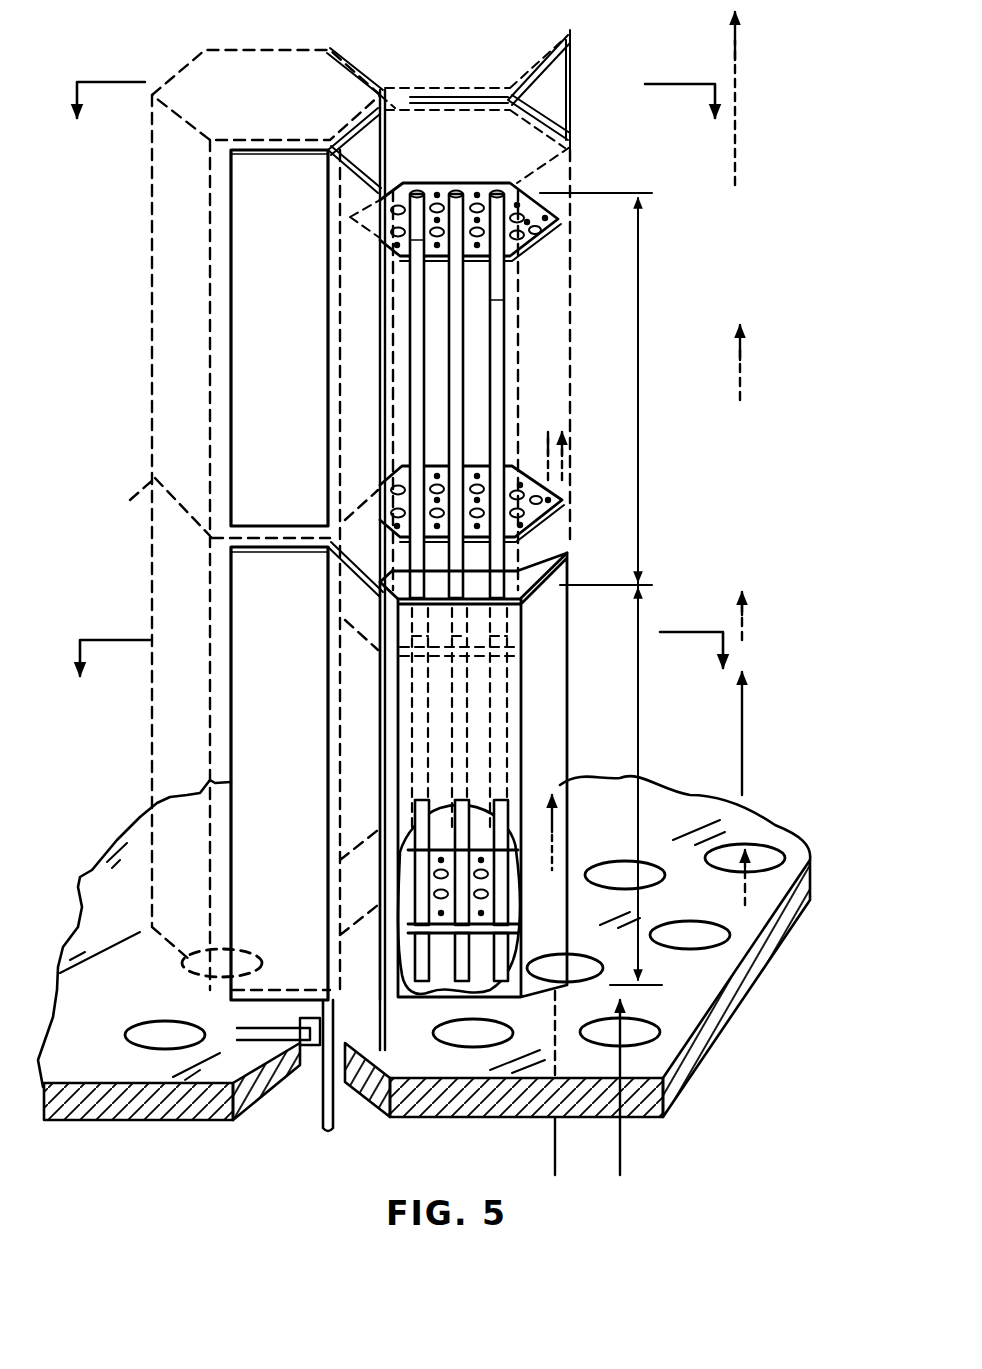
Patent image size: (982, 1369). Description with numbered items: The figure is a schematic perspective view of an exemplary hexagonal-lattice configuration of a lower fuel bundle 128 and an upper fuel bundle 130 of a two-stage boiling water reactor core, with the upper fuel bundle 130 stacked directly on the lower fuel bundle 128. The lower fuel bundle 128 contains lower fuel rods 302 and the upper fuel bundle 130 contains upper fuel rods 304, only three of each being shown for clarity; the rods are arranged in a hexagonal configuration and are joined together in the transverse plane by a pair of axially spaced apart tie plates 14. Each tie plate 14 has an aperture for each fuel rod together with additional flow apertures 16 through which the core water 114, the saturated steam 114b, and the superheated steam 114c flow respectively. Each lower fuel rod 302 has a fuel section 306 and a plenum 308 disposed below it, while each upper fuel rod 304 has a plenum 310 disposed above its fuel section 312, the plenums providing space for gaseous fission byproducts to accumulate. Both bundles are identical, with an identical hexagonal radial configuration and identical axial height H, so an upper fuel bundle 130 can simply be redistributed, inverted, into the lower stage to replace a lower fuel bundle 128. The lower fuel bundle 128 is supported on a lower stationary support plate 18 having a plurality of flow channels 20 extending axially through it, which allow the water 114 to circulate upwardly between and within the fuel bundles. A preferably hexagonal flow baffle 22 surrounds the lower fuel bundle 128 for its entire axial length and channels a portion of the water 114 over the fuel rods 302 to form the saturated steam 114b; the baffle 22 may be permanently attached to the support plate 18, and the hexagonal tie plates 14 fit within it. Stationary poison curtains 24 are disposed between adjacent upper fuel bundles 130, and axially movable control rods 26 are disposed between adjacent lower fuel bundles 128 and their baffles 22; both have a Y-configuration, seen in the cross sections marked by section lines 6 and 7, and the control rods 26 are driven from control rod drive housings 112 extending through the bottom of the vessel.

The tie plates 14 is at (555, 228).
The flow apertures 16 is at (525, 248).
The lower stationary support plate 18 is at (790, 938).
The flow channels 20 is at (775, 855).
The flow baffle 22 is at (578, 782).
The poison curtains 24 is at (455, 96).
The control rods 26 is at (232, 995).
The control rod drive housings 112 is at (322, 1113).
The inlet water 114 is at (636, 826).
The saturated steam 114b is at (745, 622).
The superheated steam 114c is at (740, 88).
The lower fuel bundle 128 is at (178, 538).
The upper fuel bundle 130 is at (280, 46).
The lower fuel rods 302 is at (472, 835).
The upper fuel rods 304 is at (510, 348).
The fuel section 306 is at (505, 715).
The plenum 308 is at (455, 975).
The plenum 310 is at (452, 230).
The fuel section 312 is at (503, 478).
The axial height H is at (640, 332).
The section line 6 is at (396, 87).
The section line 7 is at (401, 640).